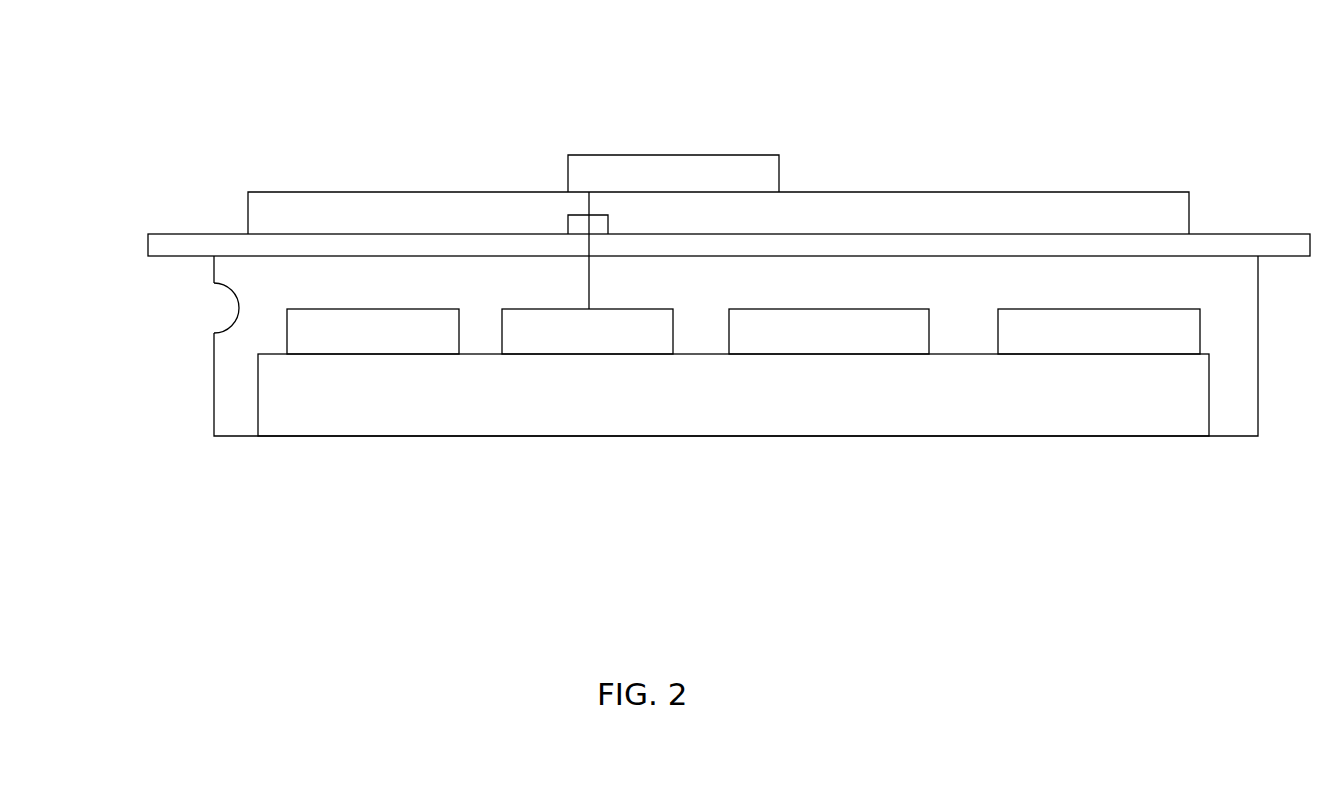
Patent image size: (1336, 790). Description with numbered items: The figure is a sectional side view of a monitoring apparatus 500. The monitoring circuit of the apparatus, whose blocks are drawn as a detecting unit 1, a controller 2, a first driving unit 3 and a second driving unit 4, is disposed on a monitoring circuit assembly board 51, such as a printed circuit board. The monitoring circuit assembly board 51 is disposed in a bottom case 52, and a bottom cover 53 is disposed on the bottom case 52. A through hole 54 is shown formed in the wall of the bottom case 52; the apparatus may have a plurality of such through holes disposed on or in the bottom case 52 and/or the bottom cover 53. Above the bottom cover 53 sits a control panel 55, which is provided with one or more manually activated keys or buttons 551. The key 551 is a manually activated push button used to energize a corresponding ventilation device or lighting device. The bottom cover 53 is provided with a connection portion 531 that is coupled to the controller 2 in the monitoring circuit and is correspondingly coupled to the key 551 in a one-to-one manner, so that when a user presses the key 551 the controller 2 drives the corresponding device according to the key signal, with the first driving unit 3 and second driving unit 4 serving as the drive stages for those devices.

The monitoring apparatus 500 is at (923, 63).
The detecting unit 1 is at (392, 356).
The controller 2 is at (532, 356).
The first driving unit 3 is at (905, 356).
The second driving unit 4 is at (1043, 356).
The monitoring circuit assembly board 51 is at (708, 395).
The bottom case 52 is at (214, 392).
The bottom cover 53 is at (185, 234).
The connection portion 531 is at (608, 218).
The through hole 54 is at (238, 300).
The control panel 55 is at (423, 192).
The key 551 is at (648, 155).